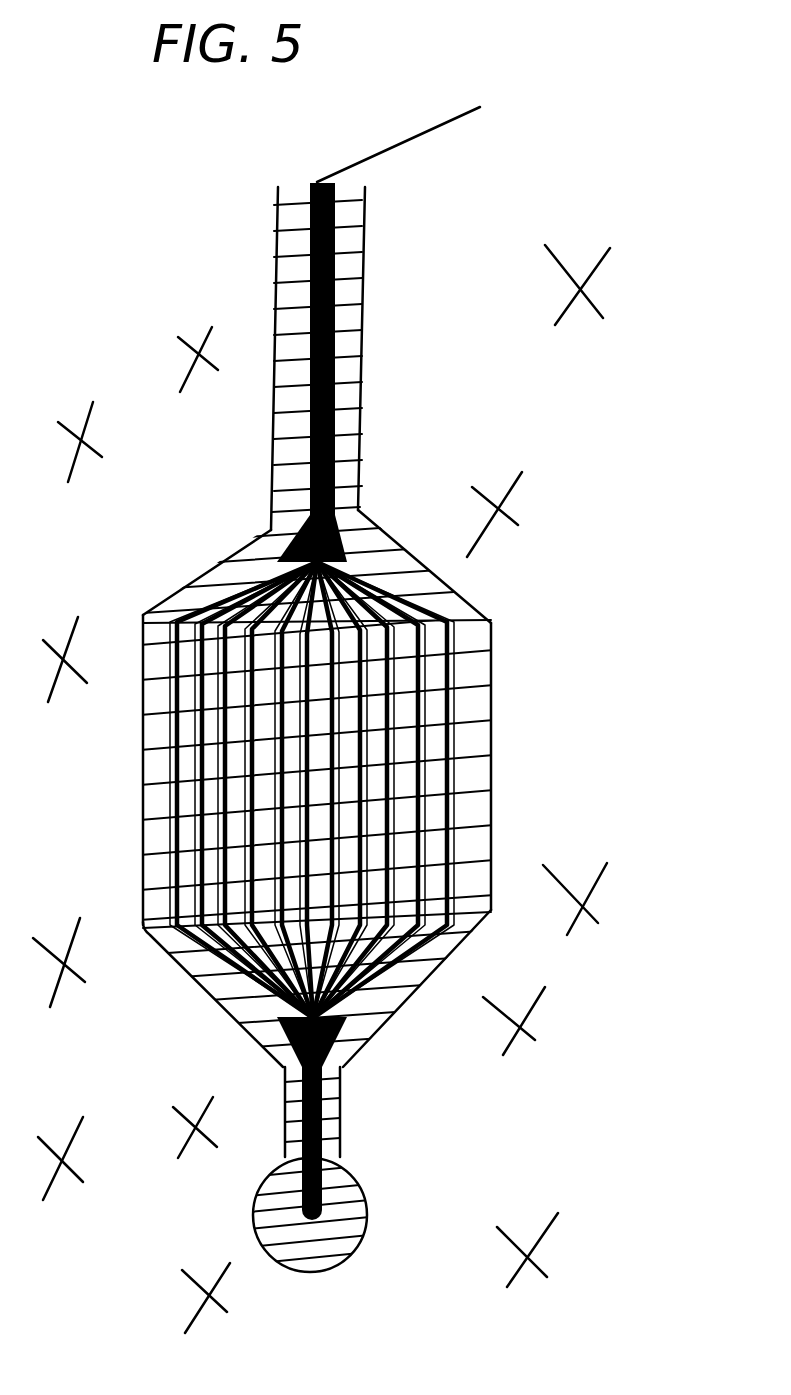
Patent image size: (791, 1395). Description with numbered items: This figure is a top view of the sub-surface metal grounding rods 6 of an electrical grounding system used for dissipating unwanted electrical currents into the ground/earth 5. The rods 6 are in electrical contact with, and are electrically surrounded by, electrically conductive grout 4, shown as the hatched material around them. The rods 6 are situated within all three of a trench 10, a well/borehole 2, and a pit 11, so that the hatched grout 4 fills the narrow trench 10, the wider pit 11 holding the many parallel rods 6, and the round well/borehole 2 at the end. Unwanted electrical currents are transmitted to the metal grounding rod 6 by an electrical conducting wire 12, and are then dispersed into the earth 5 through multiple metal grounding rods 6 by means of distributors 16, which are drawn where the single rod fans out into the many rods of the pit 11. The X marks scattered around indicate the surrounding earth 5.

The well/borehole 2 is at (253, 1212).
The electrically conductive grout 4 is at (340, 293).
The ground/earth 5 is at (72, 628).
The metal grounding rods 6 is at (343, 327).
The trench 10 is at (360, 408).
The pit 11 is at (138, 818).
The electrical conducting wire 12 is at (413, 138).
The distributors 16 is at (273, 538).